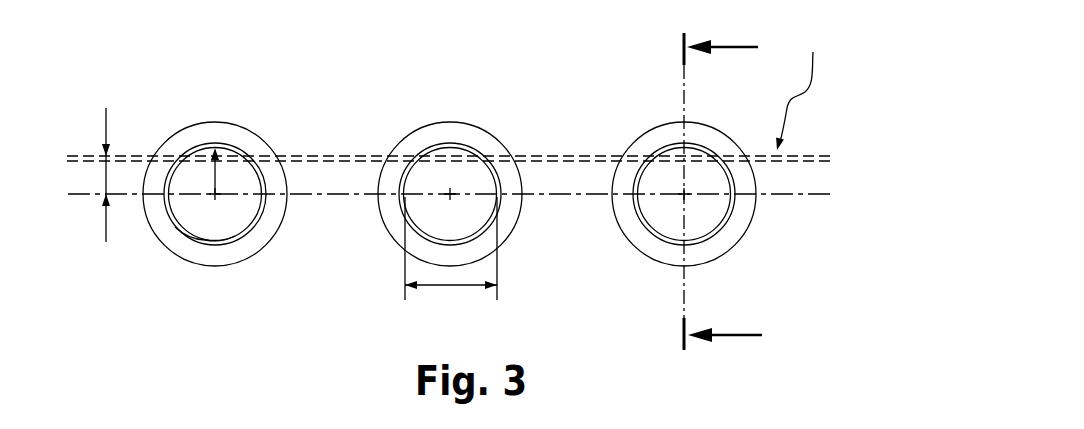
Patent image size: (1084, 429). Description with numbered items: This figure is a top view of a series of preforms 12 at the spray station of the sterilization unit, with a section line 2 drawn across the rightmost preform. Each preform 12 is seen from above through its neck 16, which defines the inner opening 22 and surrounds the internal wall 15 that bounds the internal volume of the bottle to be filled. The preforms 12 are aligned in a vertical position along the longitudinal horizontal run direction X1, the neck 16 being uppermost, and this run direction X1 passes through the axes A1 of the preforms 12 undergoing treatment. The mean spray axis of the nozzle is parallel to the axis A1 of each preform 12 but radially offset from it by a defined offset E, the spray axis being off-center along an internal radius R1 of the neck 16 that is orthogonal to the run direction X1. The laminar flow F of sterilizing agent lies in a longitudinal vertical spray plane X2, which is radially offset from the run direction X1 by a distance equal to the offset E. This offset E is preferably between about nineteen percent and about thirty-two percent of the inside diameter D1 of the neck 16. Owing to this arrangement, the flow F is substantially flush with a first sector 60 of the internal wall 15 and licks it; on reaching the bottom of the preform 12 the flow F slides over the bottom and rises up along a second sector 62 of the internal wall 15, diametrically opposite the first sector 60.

The preform 12 is at (410, 122).
The internal wall 15 is at (201, 232).
The neck 16 is at (272, 221).
The inner opening 22 is at (217, 227).
The first sector 60 is at (457, 143).
The second sector 62 is at (430, 237).
The axis A1 is at (219, 197).
The internal radius R1 is at (215, 177).
The offset E is at (91, 175).
The inside diameter D1 is at (451, 257).
The laminar flow F is at (801, 88).
The run direction X1 is at (469, 186).
The spray plane X2 is at (812, 153).
The section line 2- 2 is at (723, 184).